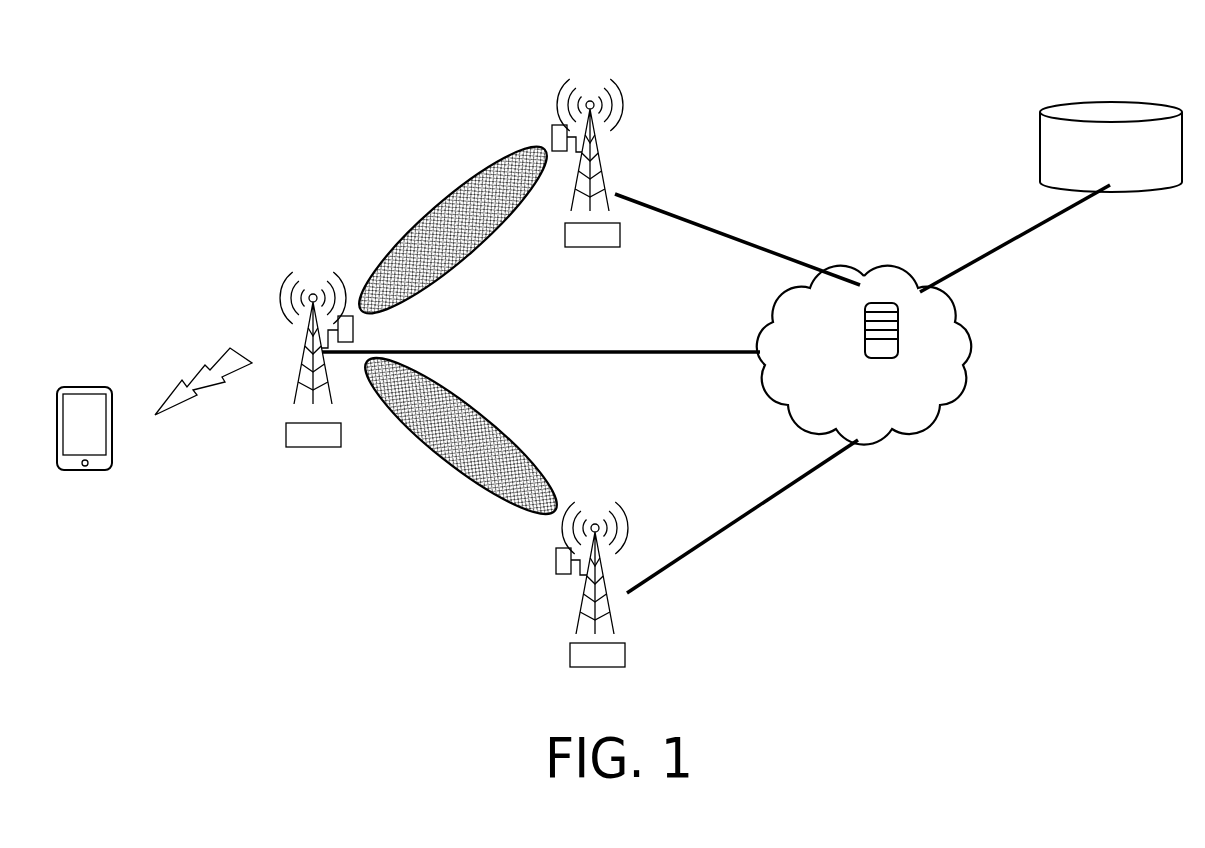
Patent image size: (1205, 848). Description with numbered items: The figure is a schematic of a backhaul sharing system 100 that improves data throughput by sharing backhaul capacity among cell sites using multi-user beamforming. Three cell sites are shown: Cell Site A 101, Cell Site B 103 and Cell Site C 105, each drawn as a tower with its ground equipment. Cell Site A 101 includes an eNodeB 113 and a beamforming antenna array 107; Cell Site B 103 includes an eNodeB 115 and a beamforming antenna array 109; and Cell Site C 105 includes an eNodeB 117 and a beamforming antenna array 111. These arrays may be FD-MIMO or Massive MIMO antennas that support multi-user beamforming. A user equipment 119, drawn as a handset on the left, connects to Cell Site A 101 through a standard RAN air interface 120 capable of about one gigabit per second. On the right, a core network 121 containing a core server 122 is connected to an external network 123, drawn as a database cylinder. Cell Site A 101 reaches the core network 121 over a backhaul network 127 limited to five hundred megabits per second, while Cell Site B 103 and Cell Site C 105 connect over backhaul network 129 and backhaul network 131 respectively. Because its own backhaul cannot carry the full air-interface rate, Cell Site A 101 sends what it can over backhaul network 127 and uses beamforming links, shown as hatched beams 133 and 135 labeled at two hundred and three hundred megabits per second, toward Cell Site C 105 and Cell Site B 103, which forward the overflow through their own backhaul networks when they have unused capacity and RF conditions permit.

The backhaul sharing system 100 is at (335, 102).
The Cell Site A 101 is at (283, 292).
The Cell Site B 103 is at (628, 525).
The Cell Site C 105 is at (571, 85).
The beamforming antenna array 107 is at (355, 330).
The beamforming antenna array 109 is at (556, 560).
The beamforming antenna array 111 is at (550, 133).
The eNodeB 113 is at (312, 448).
The eNodeB 115 is at (597, 668).
The eNodeB 117 is at (590, 248).
The user equipment 119 is at (85, 388).
The air interface 120 is at (232, 348).
The core network 121 is at (944, 398).
The core server 122 is at (865, 330).
The external network 123 is at (1051, 197).
The backhaul network 127 is at (612, 350).
The backhaul network 129 is at (731, 528).
The backhaul network 131 is at (705, 222).
The fronthaul link A to C 133 is at (465, 193).
The fronthaul link A to B 135 is at (520, 508).